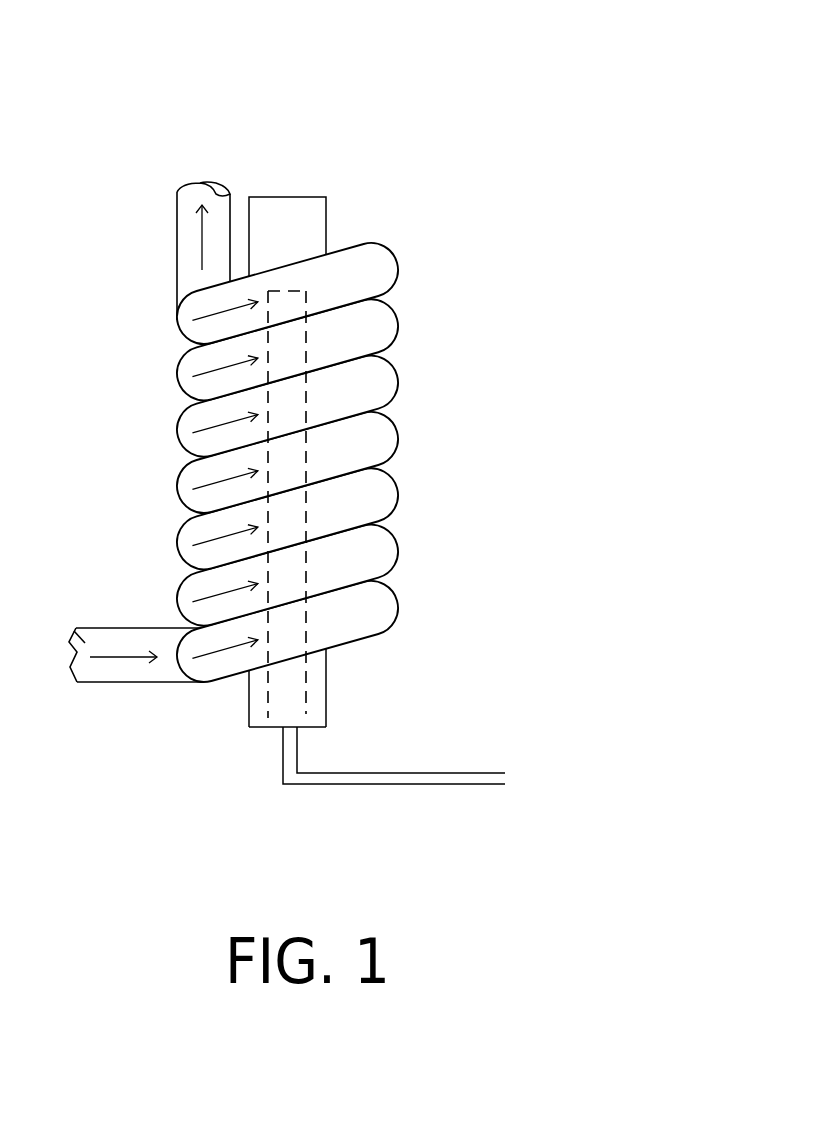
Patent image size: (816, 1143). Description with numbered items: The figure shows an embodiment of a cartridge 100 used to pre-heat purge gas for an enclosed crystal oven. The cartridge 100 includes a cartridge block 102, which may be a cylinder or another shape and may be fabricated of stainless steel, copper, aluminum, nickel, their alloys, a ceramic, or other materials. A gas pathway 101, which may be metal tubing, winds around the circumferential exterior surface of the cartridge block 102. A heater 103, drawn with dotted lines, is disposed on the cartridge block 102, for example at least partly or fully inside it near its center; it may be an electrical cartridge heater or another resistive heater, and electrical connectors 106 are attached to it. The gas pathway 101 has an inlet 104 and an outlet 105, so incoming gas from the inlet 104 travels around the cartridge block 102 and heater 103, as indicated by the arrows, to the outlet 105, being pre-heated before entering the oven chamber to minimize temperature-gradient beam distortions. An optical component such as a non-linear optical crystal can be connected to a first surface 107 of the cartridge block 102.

The cartridge 100 is at (286, 468).
The gas pathway 101 is at (399, 262).
The cartridge block 102 is at (326, 680).
The heater 103 is at (268, 710).
The inlet 104 is at (110, 628).
The outlet 105 is at (177, 232).
The electrical connectors 106 is at (450, 788).
The first surface 107 is at (267, 197).